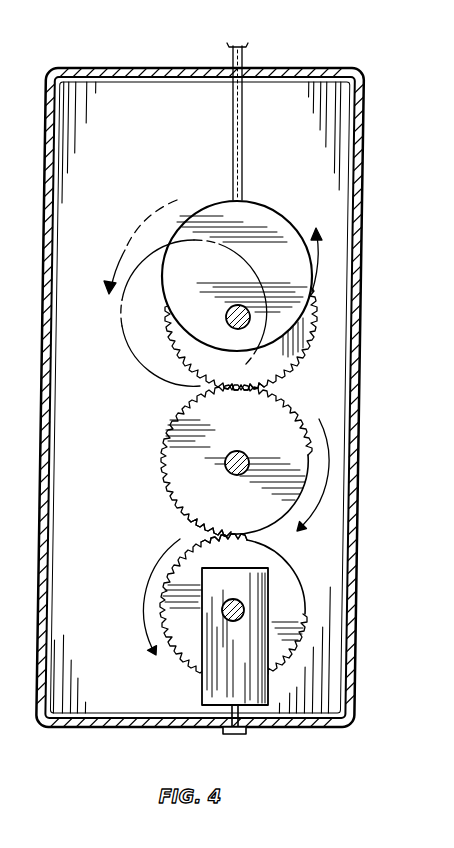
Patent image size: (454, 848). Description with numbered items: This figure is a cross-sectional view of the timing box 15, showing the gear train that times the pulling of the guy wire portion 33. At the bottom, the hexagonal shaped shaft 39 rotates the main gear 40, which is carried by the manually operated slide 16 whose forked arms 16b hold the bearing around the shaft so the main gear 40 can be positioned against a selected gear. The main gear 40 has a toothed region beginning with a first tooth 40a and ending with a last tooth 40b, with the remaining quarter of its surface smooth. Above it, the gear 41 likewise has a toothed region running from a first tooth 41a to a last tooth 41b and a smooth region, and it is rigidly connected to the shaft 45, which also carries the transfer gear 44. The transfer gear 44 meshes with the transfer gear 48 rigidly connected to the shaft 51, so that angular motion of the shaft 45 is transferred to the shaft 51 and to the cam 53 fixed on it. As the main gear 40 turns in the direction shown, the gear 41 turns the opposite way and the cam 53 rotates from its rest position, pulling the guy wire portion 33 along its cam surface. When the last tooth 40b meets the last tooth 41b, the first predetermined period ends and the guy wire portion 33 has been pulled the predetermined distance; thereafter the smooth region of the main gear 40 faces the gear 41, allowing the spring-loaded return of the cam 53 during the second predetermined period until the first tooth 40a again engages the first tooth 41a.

The timing box 15 is at (390, 94).
The guy wire portion 33 is at (240, 140).
The cam 53 is at (268, 205).
The shaft 51 is at (232, 303).
The transfer gear 48 is at (313, 332).
The transfer gear 44 is at (273, 388).
The shaft 45 is at (252, 429).
The gear 41 is at (258, 463).
The first tooth 41a is at (313, 452).
The last tooth 41b is at (200, 518).
The main gear 40 is at (276, 608).
The first tooth 40a is at (307, 613).
The last tooth 40b is at (250, 540).
The hexagonal shaped shaft 39 is at (244, 600).
The forked arms 16b is at (217, 698).
The manually operated slide 16 is at (247, 731).